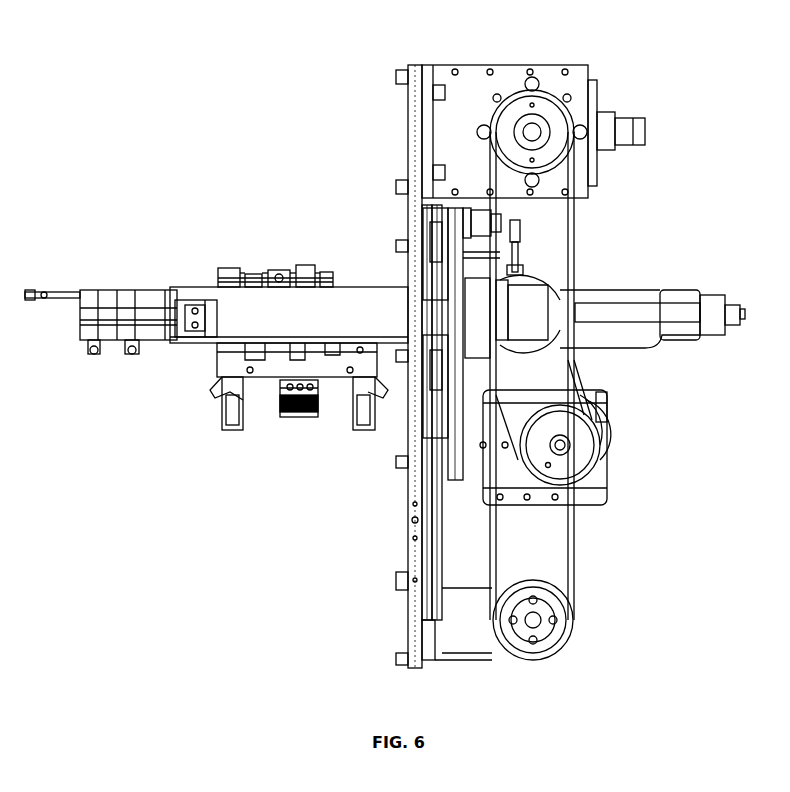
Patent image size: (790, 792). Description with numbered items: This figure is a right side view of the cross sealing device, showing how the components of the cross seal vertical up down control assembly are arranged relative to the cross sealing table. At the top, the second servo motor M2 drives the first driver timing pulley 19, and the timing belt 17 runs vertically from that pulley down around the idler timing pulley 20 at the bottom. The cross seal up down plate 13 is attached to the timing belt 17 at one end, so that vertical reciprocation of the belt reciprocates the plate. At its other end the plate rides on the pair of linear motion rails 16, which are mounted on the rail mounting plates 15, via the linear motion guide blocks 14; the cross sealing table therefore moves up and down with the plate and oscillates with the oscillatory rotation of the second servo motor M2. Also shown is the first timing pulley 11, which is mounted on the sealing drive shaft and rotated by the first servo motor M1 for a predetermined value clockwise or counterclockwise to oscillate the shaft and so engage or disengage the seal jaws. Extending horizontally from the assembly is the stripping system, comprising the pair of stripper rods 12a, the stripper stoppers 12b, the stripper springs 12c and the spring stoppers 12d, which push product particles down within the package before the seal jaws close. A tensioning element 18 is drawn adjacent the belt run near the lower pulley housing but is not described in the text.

The first timing pulley 11 is at (605, 465).
The stripper rod 12a is at (237, 265).
The stripper stopper 12b is at (272, 283).
The stripper spring 12c is at (292, 280).
The spring stopper 12d is at (247, 313).
The cross seal up down plate 13 is at (430, 462).
The linear motion guide blocks 14 is at (420, 397).
The rail mounting plates 15 is at (410, 550).
The linear motion rails 16 is at (442, 537).
The timing belt 17 is at (575, 257).
The belt tensioner 18 is at (595, 410).
The first driver timing pulley 19 is at (568, 149).
The idler timing pulley 20 is at (567, 650).
The first servo motor M1 is at (572, 366).
The second servo motor M2 is at (616, 118).